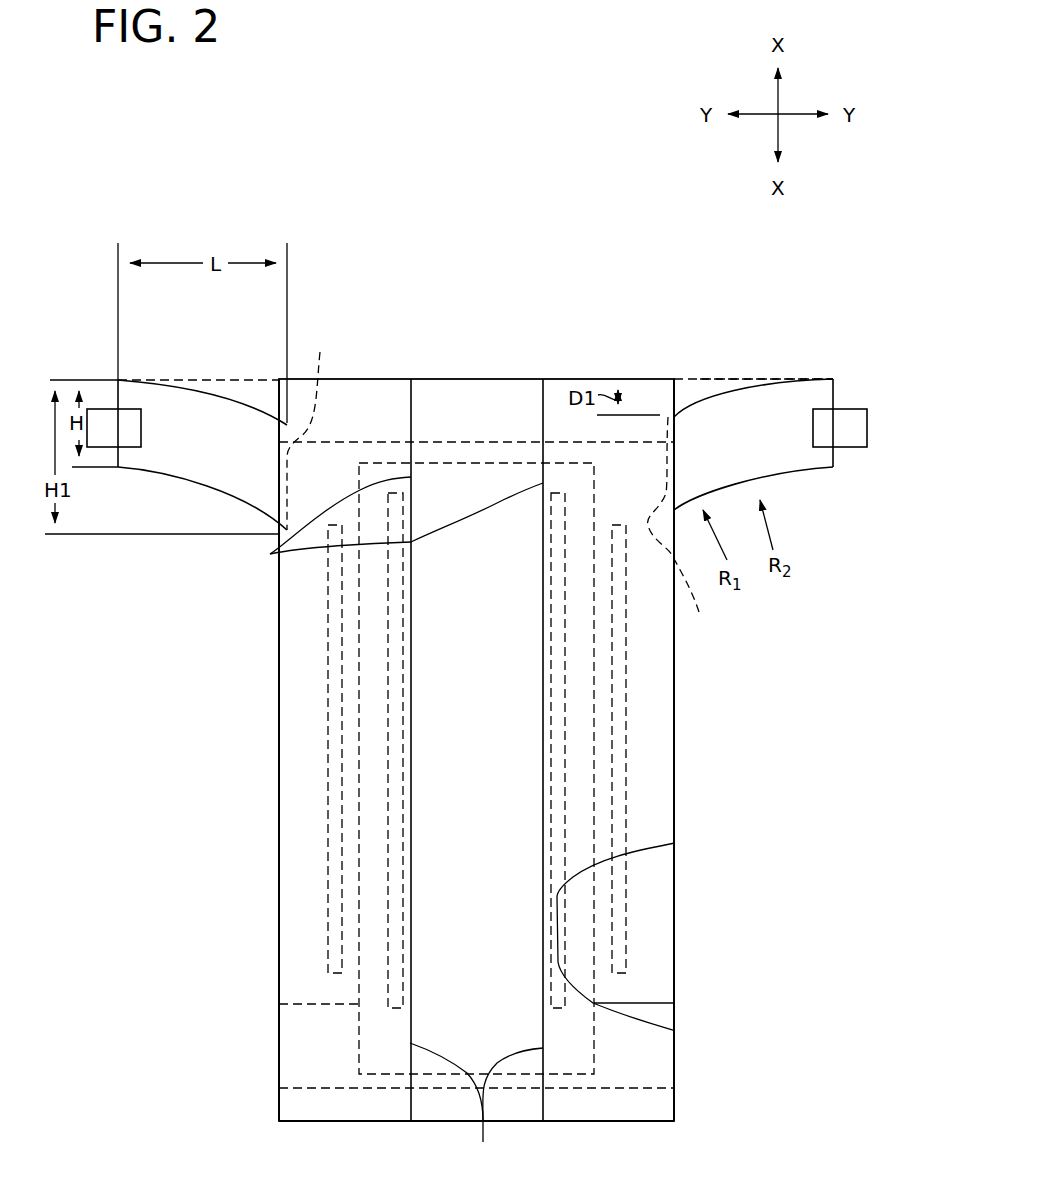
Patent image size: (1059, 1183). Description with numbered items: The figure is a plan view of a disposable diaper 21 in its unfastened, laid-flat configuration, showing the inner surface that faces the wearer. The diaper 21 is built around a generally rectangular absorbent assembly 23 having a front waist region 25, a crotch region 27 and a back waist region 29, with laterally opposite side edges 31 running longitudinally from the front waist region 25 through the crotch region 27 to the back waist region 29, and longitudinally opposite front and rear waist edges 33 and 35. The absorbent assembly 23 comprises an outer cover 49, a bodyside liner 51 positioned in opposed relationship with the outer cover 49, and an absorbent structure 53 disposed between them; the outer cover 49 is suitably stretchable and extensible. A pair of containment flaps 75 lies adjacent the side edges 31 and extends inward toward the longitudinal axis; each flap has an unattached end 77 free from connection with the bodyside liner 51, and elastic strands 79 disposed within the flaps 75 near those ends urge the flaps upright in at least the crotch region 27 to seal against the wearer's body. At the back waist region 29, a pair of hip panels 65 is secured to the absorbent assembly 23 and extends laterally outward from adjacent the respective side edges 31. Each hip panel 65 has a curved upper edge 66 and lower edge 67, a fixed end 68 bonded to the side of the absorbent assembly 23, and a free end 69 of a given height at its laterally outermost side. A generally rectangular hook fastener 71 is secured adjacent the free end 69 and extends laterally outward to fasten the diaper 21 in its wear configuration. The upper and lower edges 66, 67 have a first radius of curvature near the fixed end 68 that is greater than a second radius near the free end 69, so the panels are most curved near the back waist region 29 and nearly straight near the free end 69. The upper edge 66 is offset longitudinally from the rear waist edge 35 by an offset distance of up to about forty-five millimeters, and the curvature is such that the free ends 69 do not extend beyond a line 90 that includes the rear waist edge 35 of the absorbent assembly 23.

The diaper 21 is at (236, 192).
The absorbent assembly 23 is at (268, 915).
The front waist region 25 is at (370, 1027).
The crotch region 27 is at (297, 753).
The back waist region 29 is at (607, 476).
The side edges 31 is at (279, 695).
The front waist edge 33 is at (617, 1122).
The rear waist edge 35 is at (411, 379).
The outer cover 49 is at (667, 907).
The bodyside liner 51 is at (457, 821).
The absorbent structure 53 is at (583, 973).
The hip panel 65 is at (203, 368).
The upper edge 66 is at (241, 379).
The lower edge 67 is at (253, 497).
The fixed end 68 is at (503, 485).
The free end 69 is at (118, 391).
The hook fastener 71 is at (103, 448).
The containment flap 75 is at (270, 554).
The unattached end 77 is at (476, 1104).
The elastic strands 79 is at (558, 560).
The line 90 is at (733, 376).